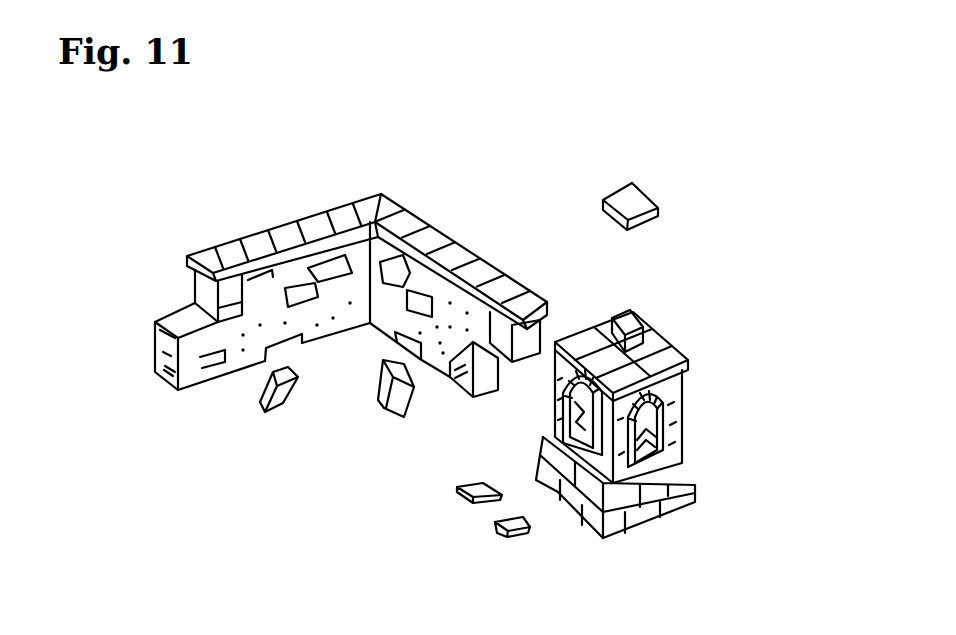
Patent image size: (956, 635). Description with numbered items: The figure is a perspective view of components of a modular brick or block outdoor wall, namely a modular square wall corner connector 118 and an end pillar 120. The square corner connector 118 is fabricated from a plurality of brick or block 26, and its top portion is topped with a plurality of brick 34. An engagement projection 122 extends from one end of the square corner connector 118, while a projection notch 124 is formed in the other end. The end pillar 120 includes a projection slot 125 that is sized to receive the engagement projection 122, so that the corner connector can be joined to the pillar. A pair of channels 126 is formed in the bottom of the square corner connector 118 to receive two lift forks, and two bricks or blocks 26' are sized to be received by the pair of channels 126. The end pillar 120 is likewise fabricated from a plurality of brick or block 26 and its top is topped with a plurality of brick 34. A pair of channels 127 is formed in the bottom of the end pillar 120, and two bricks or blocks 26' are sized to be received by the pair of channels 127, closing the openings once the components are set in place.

The square corner connector 118 is at (331, 349).
The end pillar 120 is at (689, 393).
The engagement projection 122 is at (545, 315).
The projection notch 124 is at (167, 292).
The projection slot 125 is at (641, 351).
The channels 126 is at (305, 346).
The channels 127 is at (580, 522).
The brick or block 26 is at (595, 465).
The bricks or blocks 26' is at (275, 441).
The brick 34 is at (432, 242).